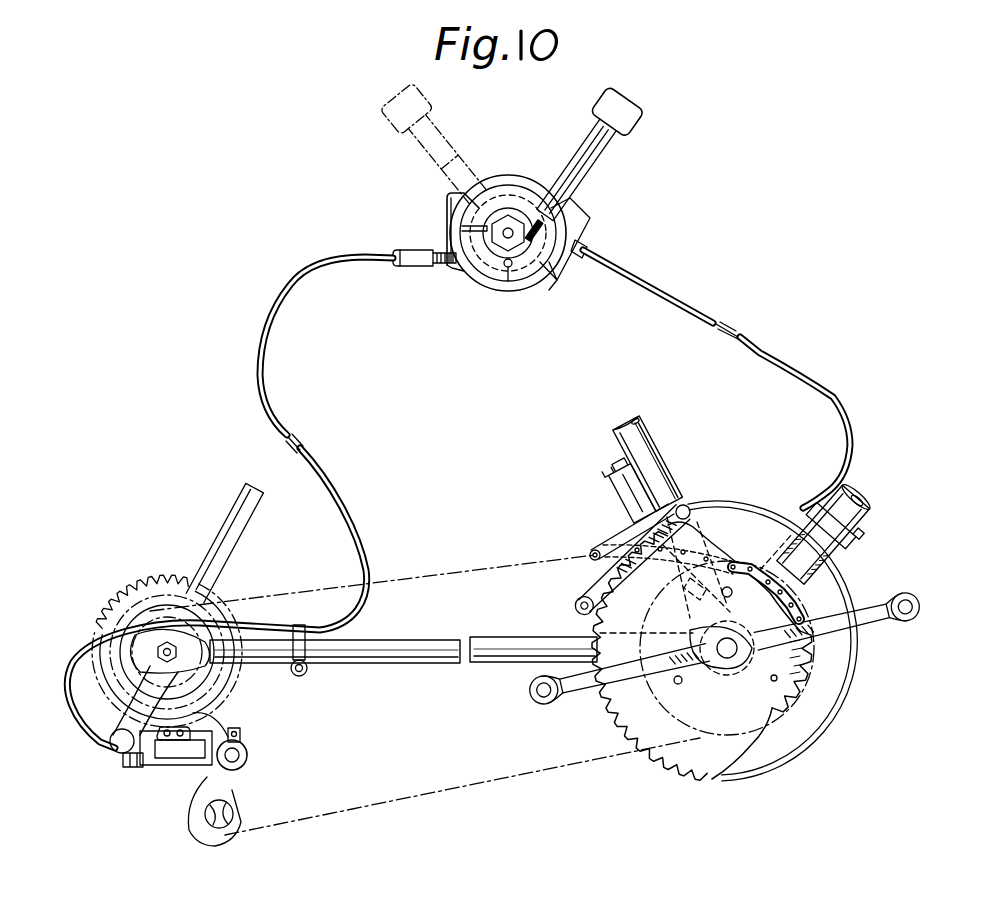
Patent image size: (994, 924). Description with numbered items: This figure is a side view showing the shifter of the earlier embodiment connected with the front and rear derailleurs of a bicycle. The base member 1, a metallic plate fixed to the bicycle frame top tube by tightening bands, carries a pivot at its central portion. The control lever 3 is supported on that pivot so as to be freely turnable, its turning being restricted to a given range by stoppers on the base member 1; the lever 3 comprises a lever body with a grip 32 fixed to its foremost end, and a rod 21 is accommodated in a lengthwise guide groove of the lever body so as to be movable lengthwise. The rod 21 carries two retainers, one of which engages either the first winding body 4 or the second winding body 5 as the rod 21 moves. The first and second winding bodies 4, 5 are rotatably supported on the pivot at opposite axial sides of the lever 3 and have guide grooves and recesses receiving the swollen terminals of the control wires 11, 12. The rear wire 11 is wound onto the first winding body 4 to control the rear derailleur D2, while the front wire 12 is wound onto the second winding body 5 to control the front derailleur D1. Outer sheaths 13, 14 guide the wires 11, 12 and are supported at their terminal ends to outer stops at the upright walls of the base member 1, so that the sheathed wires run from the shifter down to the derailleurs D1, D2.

The base member 1 is at (445, 216).
The control lever 3 is at (582, 163).
The first winding body 4 is at (511, 195).
The second winding body 5 is at (494, 184).
The control wire 11 is at (461, 270).
The control wire 12 is at (554, 274).
The outer sheath 13 is at (383, 266).
The outer sheath 14 is at (606, 281).
The rod 21 is at (583, 176).
The grip 32 is at (592, 108).
The front derailleur D1 is at (612, 528).
The rear derailleur D2 is at (260, 747).